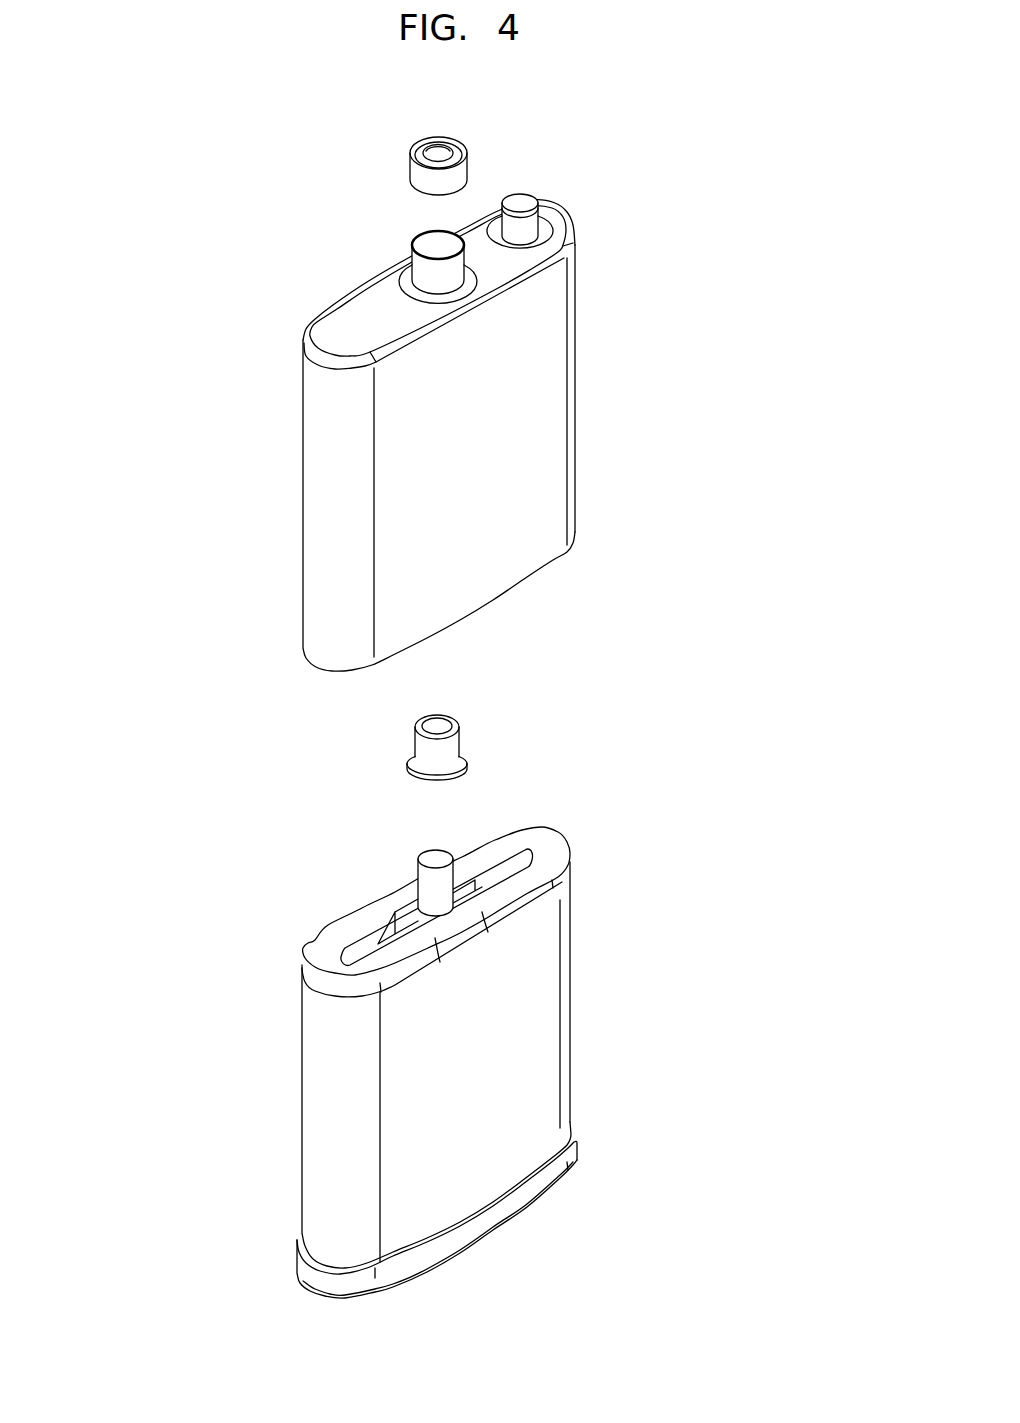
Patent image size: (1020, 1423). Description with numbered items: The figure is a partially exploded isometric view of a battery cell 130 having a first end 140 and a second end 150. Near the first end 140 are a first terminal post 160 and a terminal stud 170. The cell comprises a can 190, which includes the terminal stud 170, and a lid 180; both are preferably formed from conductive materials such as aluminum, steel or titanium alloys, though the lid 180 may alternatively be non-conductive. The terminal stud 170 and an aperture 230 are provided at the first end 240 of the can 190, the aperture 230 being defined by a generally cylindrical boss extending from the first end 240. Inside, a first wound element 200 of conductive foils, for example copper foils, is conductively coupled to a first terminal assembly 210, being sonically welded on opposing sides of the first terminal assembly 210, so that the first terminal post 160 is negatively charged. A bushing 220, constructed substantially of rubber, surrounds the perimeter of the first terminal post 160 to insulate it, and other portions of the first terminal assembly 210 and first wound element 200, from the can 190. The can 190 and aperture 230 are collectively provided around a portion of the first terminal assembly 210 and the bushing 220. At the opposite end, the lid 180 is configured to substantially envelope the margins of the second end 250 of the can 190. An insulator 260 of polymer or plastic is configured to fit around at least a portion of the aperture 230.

The battery cell 130 is at (635, 142).
The first end 140 is at (269, 359).
The second end 150 is at (280, 1295).
The first terminal post 160 is at (437, 852).
The terminal stud 170 is at (520, 197).
The lid 180 is at (574, 1170).
The can 190 is at (576, 368).
The first wound element 200 is at (556, 843).
The first terminal assembly 210 is at (385, 873).
The bushing 220 is at (466, 733).
The aperture 230 is at (436, 236).
The first end of can 240 is at (578, 191).
The second end of can 250 is at (270, 656).
The insulator 260 is at (456, 136).